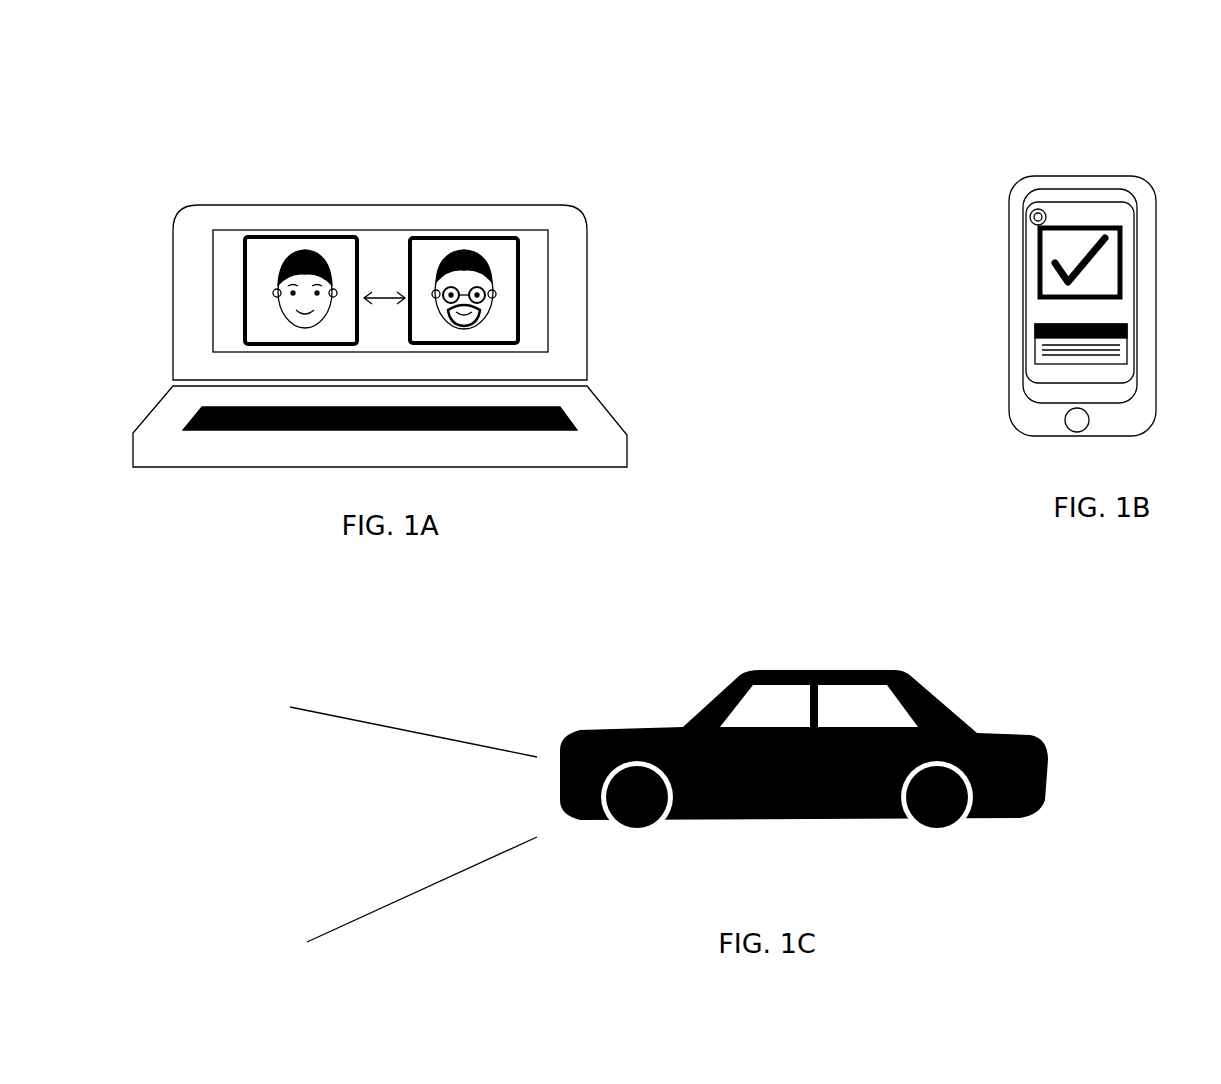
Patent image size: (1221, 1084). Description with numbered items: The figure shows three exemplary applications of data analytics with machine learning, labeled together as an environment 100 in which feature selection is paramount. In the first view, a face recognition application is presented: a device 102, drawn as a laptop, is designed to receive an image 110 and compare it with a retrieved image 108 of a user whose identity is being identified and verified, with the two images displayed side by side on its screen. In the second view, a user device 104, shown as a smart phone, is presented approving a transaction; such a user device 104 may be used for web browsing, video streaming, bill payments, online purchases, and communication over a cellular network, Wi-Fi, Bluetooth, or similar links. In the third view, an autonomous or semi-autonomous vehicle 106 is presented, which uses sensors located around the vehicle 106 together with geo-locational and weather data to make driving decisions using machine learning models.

In FIG. 1B, the system environment 100 is at (1096, 92).
In FIG. 1A, the device 102 is at (475, 205).
In FIG. 1B, the user device 104 is at (1122, 178).
In FIG. 1C, the vehicle 106 is at (870, 667).
In FIG. 1A, the retrieved image 108 is at (287, 243).
In FIG. 1A, the image 110 is at (437, 240).